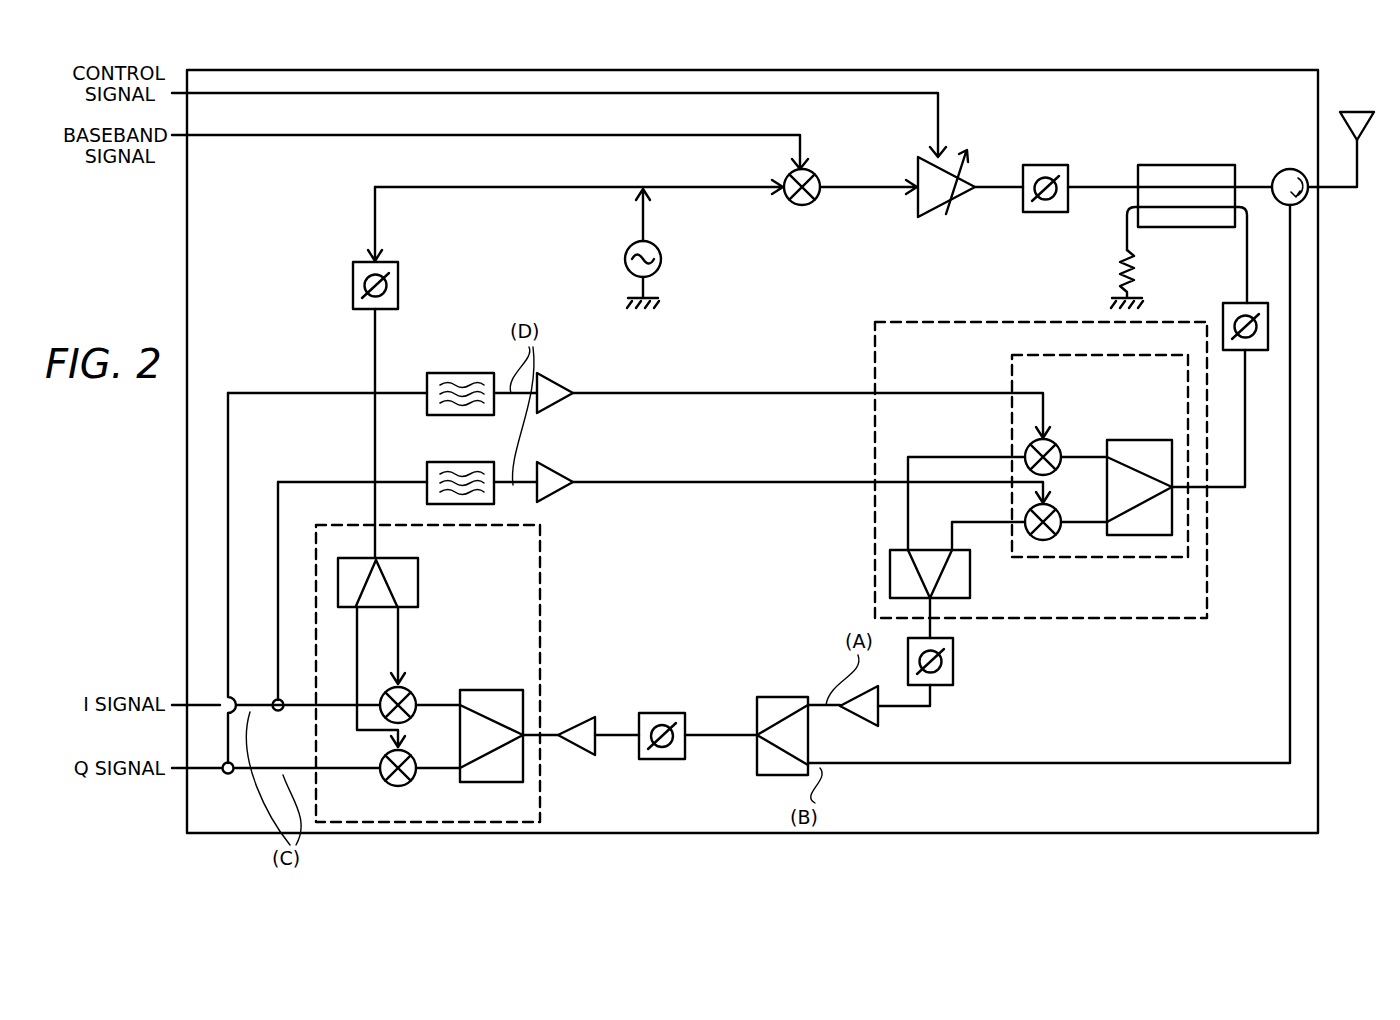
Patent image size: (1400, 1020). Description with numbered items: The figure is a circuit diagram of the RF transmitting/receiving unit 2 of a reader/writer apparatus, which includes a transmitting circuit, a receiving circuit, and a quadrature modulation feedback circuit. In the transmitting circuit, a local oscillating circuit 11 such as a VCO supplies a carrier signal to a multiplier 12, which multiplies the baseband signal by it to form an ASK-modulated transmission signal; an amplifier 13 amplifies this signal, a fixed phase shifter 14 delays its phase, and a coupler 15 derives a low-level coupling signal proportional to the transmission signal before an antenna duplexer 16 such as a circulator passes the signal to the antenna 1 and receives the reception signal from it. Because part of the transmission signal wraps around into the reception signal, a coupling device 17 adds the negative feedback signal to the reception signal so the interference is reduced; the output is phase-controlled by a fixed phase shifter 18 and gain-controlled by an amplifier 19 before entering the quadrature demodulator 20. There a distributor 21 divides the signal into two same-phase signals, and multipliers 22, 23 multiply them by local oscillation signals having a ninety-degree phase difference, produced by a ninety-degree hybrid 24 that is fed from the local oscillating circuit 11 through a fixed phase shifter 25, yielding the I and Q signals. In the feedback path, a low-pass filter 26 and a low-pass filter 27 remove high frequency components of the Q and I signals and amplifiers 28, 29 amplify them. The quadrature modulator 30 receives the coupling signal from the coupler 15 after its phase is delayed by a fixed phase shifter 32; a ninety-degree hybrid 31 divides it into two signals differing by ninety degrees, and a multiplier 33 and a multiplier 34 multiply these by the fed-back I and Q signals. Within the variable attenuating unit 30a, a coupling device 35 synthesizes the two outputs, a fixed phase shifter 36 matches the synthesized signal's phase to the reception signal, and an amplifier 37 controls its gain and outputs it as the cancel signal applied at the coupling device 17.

The antenna 1 is at (1350, 110).
The RF transmitting/receiving unit 2 is at (1320, 393).
The local oscillating circuit 11 is at (624, 260).
The multiplier 12 is at (790, 207).
The amplifier 13 is at (918, 212).
The fixed phase shifter 14 is at (1036, 166).
The coupler 15 is at (1237, 176).
The antenna duplexer 16 is at (1306, 198).
The coupling device 17 is at (768, 776).
The fixed phase shifter 18 is at (675, 760).
The amplifier 19 is at (584, 756).
The quadrature demodulator 20 is at (521, 823).
The distributor 21 is at (525, 716).
The multiplier 22 is at (393, 786).
The multiplier 23 is at (410, 692).
The 90-degree hybrid 24 is at (340, 560).
The fixed phase shifter 25 is at (352, 283).
The low-pass filter 26 is at (476, 372).
The low-pass filter 27 is at (427, 472).
The amplifier 28 is at (549, 379).
The amplifier 29 is at (549, 468).
The quadrature modulator 30 is at (1188, 550).
The variable attenuating unit 30a is at (1207, 603).
The 90-degree hybrid 31 is at (1172, 527).
The fixed phase shifter 32 is at (1270, 322).
The multiplier 33 is at (1054, 538).
The multiplier 34 is at (1056, 440).
The coupling device 35 is at (890, 578).
The fixed phase shifter 36 is at (948, 686).
The amplifier 37 is at (866, 722).